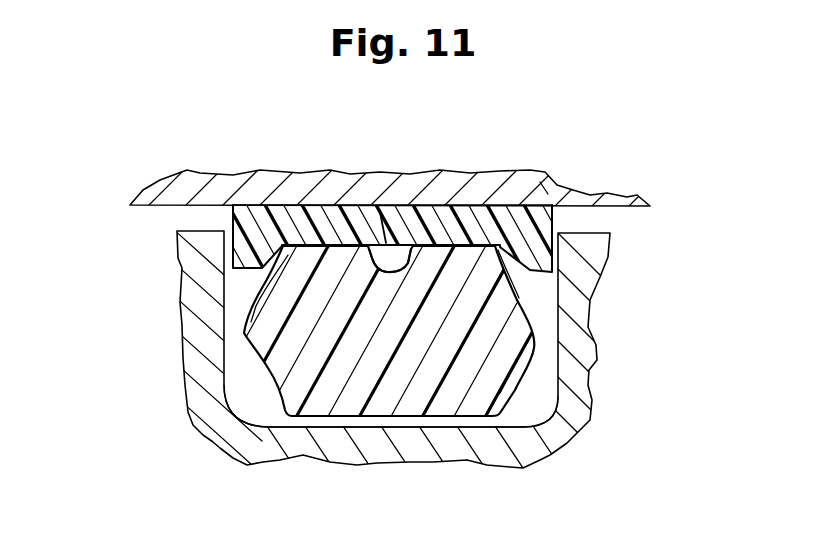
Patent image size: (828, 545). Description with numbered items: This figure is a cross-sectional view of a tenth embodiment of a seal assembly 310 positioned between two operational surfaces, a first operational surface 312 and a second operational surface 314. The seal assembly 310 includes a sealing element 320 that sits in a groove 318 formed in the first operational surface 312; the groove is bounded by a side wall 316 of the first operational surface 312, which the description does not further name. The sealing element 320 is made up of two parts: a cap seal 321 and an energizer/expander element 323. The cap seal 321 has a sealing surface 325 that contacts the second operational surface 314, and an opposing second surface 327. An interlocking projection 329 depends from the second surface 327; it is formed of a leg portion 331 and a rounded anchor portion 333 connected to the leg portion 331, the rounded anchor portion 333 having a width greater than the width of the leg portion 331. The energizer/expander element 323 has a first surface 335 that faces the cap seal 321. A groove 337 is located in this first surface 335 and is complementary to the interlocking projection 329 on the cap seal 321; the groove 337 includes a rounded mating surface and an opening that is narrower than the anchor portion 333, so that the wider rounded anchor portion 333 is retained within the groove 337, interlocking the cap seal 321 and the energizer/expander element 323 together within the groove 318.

The seal assembly 310 is at (576, 209).
The first operational surface 312 is at (610, 233).
The second operational surface 314 is at (152, 206).
The groove side wall 316 is at (182, 215).
The groove 318 is at (522, 468).
The sealing element 320 is at (288, 391).
The cap seal 321 is at (282, 220).
The energizer/expander element 323 is at (383, 400).
The sealing surface 325 is at (368, 246).
The second surface 327 is at (376, 262).
The interlocking projection 329 is at (377, 271).
The leg portion 331 is at (447, 212).
The rounded anchor portion 333 is at (360, 334).
The first surface 335 is at (540, 182).
The groove 337 is at (382, 214).